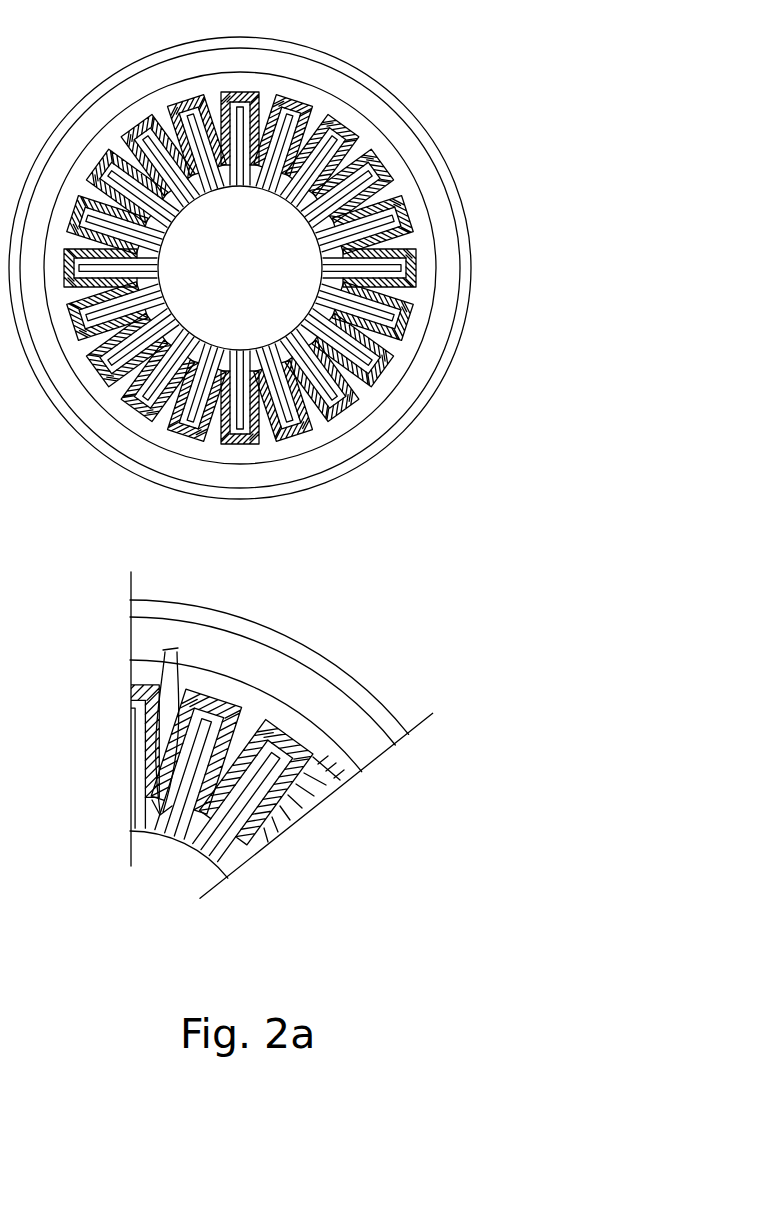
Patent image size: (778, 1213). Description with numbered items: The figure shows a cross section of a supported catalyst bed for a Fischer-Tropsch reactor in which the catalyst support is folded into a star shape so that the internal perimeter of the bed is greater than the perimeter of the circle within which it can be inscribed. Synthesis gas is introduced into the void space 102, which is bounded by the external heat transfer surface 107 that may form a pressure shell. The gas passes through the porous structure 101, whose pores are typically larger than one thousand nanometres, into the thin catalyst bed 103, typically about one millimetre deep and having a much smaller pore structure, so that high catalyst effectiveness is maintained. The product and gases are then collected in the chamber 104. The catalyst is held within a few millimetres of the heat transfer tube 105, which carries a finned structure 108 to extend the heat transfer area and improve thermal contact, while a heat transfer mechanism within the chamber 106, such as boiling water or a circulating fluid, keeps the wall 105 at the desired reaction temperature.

The porous structure 101 is at (257, 717).
The void space 102 is at (353, 740).
The catalyst bed 103 is at (312, 810).
The chamber 104 is at (257, 855).
The heat transfer tube 105 is at (207, 865).
The chamber 106 is at (197, 883).
The external heat transfer surface 107 is at (292, 650).
The finned structure 108 is at (234, 866).